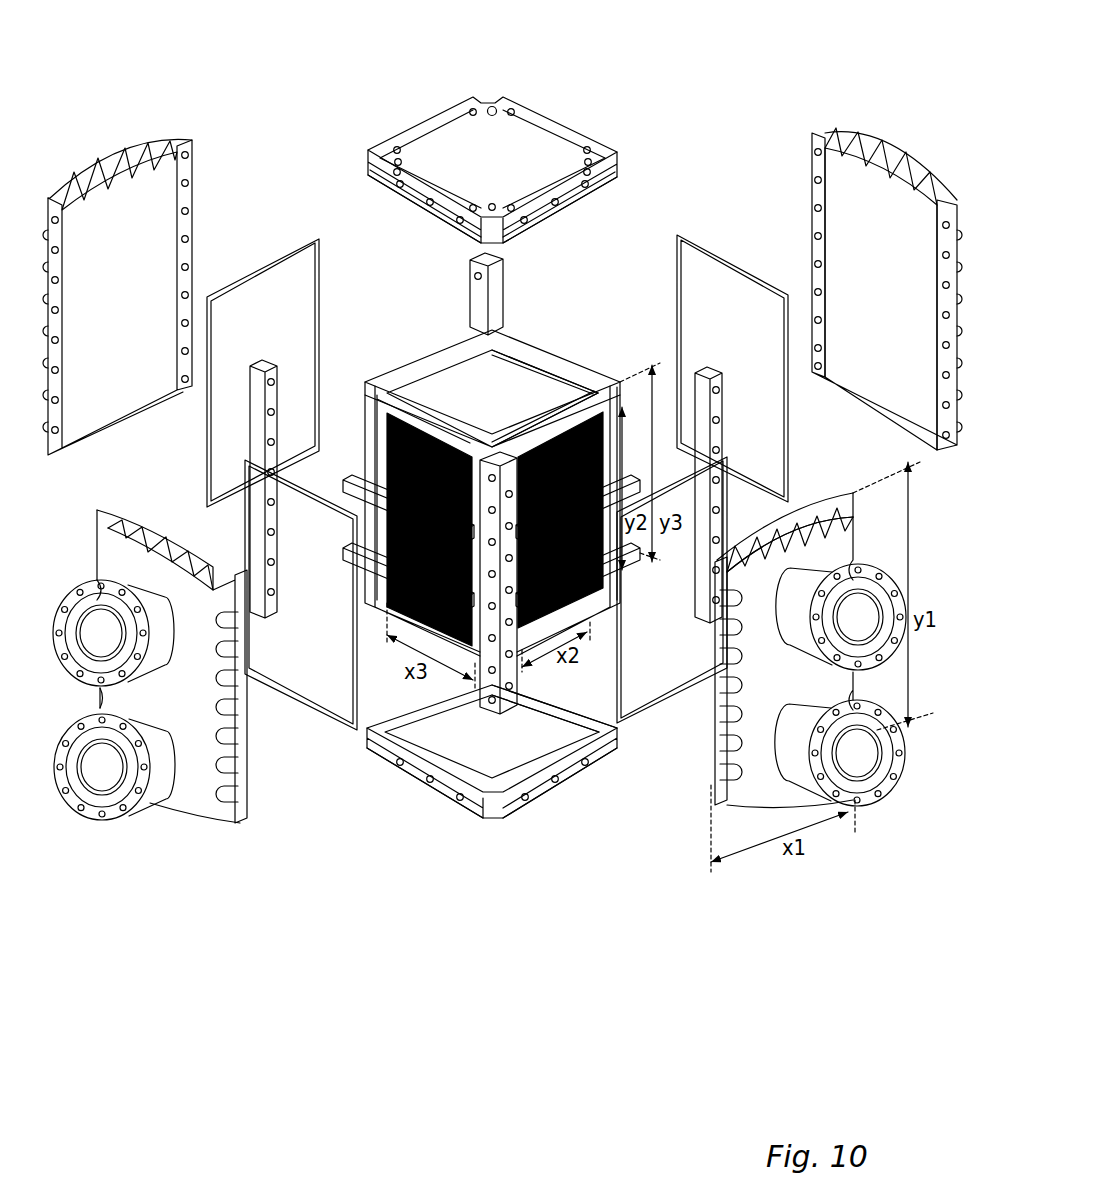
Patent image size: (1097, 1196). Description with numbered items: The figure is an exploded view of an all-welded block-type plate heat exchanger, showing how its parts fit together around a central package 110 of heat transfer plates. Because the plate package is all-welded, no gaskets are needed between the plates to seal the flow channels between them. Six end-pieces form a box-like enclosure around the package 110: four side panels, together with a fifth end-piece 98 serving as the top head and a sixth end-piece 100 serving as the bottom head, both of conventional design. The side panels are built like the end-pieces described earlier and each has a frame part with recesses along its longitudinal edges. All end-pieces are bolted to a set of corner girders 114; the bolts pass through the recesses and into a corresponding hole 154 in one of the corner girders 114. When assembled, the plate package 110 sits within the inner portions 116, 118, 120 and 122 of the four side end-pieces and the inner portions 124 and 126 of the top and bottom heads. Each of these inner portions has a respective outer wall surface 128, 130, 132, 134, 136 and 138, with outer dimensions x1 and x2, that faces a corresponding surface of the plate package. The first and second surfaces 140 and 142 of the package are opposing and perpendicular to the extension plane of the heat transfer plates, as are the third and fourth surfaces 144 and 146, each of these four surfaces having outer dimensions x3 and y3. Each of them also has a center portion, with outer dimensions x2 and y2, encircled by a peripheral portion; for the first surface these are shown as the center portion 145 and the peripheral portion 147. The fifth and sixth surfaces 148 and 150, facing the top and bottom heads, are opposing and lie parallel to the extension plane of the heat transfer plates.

The fifth end-piece 98 is at (515, 160).
The sixth end-piece 100 is at (530, 804).
The package of heat transfer plates 110 is at (492, 465).
The corner girder 114 is at (507, 258).
The inner portion of the first end-piece 116 is at (795, 520).
The inner portion of the second end-piece 118 is at (155, 146).
The inner portion of the third end-piece 120 is at (873, 136).
The inner portion of the fourth end-piece 122 is at (183, 543).
The inner portion of the fifth end-piece 124 is at (618, 190).
The inner portion of the sixth end-piece 126 is at (460, 815).
The outer wall surface of the first inner portion 128 is at (788, 699).
The outer wall surface of the second inner portion 130 is at (140, 196).
The outer wall surface of the third inner portion 132 is at (850, 185).
The outer wall surface of the fourth inner portion 134 is at (168, 700).
The outer wall surface of the fifth inner portion 136 is at (395, 195).
The outer wall surface of the sixth inner portion 138 is at (547, 800).
The first surface of the plate package 140 is at (537, 630).
The second surface of the plate package 142 is at (420, 383).
The third surface of the plate package 144 is at (505, 365).
The center portion of the first surface 145 is at (565, 450).
The fourth surface of the plate package 146 is at (380, 585).
The peripheral portion of the first surface 147 is at (613, 400).
The fifth surface of the plate package 148 is at (575, 405).
The sixth surface of the plate package 150 is at (374, 610).
The hole 154 is at (530, 697).